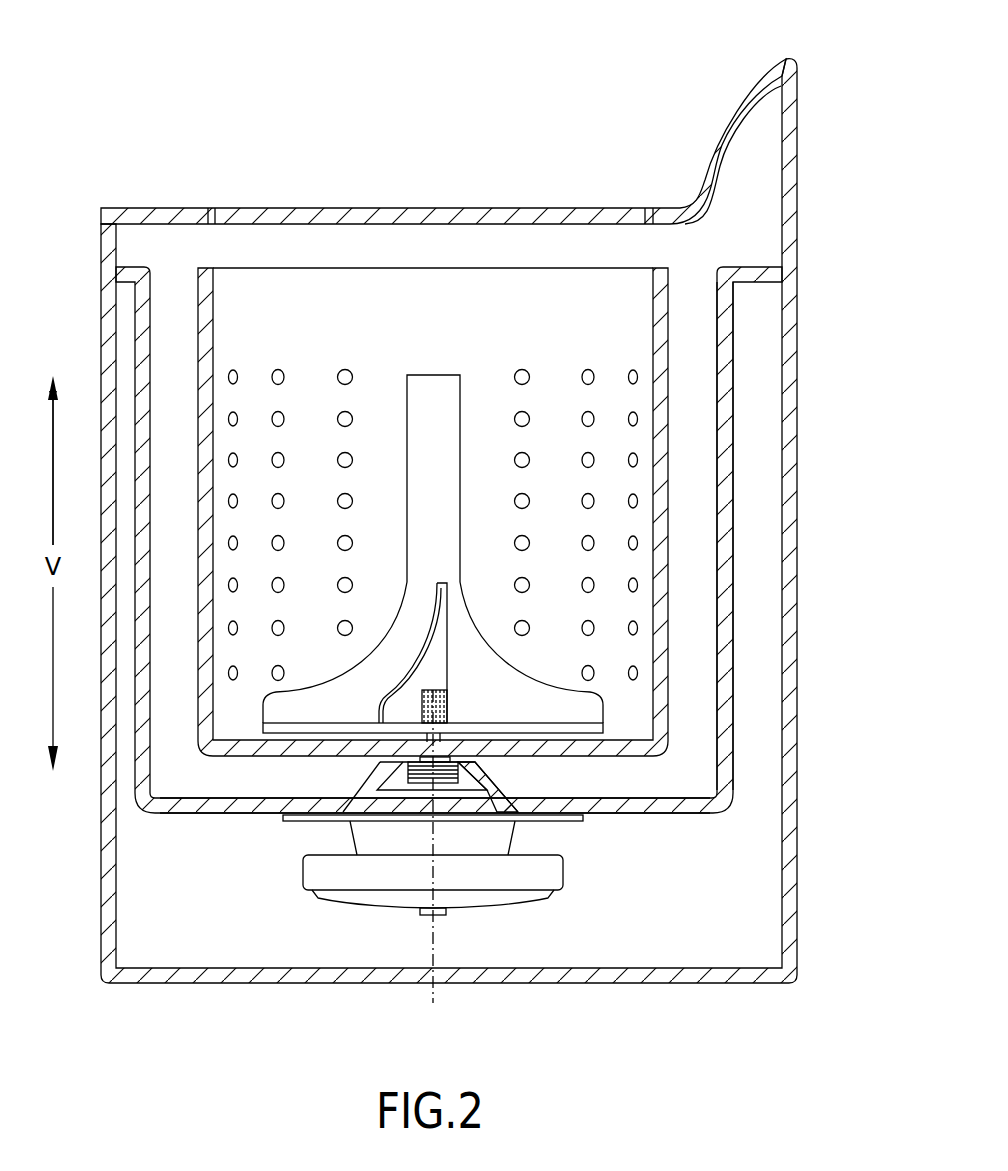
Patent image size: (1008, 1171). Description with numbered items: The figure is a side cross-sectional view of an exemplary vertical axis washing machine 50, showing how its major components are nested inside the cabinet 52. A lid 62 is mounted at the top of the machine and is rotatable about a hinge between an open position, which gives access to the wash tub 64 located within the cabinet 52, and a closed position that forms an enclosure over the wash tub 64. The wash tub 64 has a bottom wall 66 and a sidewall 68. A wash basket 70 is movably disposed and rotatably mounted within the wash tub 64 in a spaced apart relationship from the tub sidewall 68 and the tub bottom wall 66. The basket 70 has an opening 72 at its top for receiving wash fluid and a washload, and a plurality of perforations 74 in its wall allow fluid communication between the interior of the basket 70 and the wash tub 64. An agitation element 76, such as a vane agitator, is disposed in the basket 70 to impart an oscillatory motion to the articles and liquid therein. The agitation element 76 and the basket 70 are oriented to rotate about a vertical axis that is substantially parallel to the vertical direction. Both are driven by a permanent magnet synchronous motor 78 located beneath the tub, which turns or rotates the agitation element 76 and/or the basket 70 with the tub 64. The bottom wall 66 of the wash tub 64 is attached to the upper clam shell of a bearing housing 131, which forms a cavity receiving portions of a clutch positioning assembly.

The vertical axis washing machine 50 is at (622, 97).
The cabinet 52 is at (790, 346).
The lid 62 is at (365, 215).
The wash tub 64 is at (725, 663).
The bottom wall 66 is at (655, 815).
The sidewall 68 is at (733, 475).
The wash basket 70 is at (200, 304).
The opening 72 is at (517, 270).
The perforations 74 is at (347, 374).
The agitation element 76 is at (437, 382).
The permanent magnet synchronous motor 78 is at (548, 880).
The bearing housing 131 is at (493, 820).